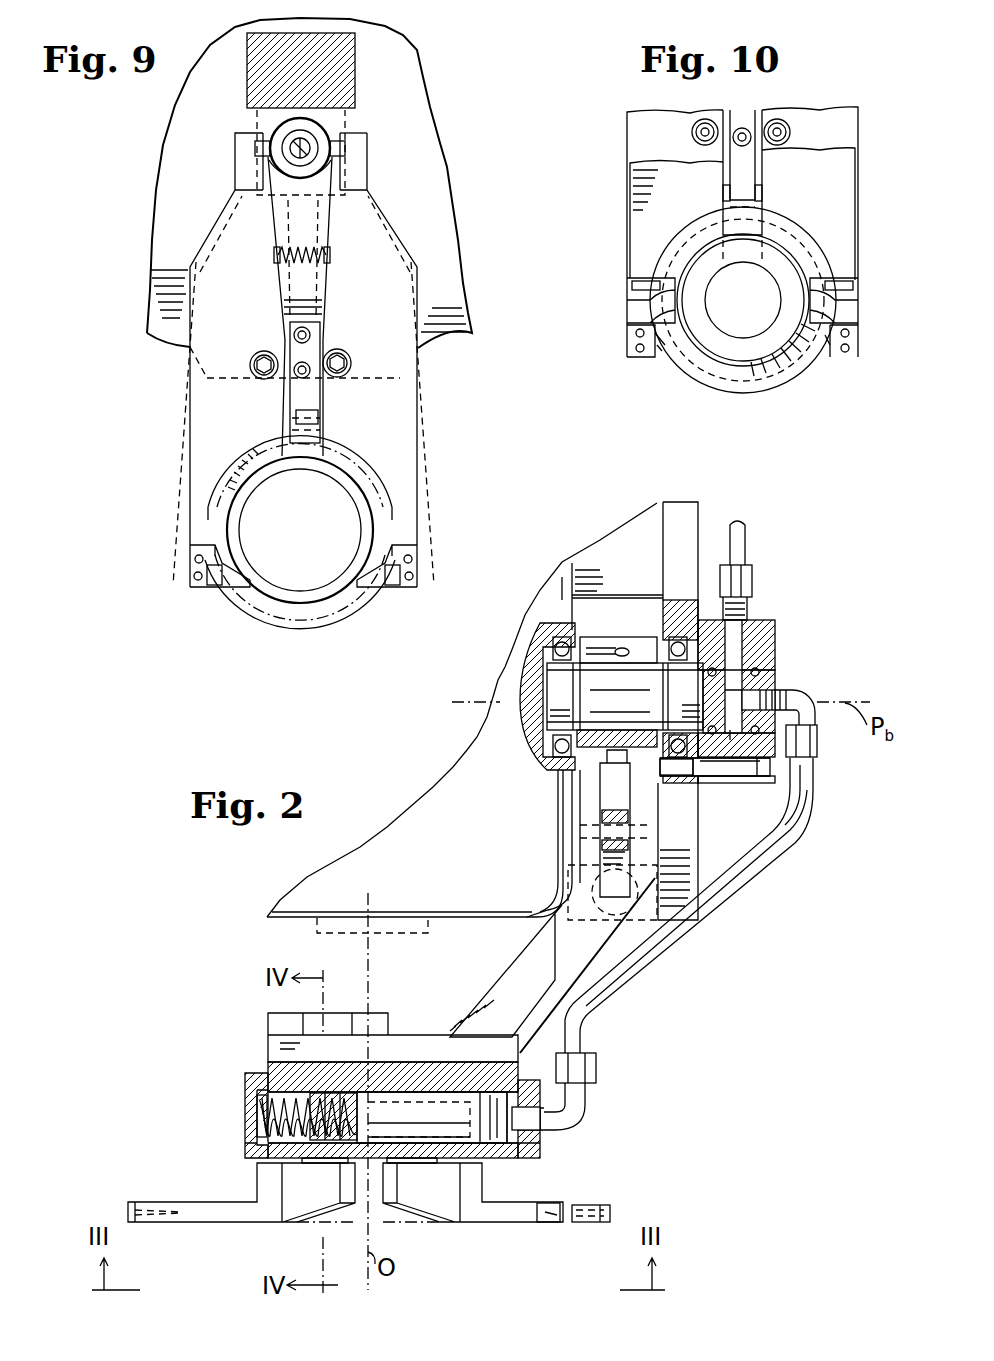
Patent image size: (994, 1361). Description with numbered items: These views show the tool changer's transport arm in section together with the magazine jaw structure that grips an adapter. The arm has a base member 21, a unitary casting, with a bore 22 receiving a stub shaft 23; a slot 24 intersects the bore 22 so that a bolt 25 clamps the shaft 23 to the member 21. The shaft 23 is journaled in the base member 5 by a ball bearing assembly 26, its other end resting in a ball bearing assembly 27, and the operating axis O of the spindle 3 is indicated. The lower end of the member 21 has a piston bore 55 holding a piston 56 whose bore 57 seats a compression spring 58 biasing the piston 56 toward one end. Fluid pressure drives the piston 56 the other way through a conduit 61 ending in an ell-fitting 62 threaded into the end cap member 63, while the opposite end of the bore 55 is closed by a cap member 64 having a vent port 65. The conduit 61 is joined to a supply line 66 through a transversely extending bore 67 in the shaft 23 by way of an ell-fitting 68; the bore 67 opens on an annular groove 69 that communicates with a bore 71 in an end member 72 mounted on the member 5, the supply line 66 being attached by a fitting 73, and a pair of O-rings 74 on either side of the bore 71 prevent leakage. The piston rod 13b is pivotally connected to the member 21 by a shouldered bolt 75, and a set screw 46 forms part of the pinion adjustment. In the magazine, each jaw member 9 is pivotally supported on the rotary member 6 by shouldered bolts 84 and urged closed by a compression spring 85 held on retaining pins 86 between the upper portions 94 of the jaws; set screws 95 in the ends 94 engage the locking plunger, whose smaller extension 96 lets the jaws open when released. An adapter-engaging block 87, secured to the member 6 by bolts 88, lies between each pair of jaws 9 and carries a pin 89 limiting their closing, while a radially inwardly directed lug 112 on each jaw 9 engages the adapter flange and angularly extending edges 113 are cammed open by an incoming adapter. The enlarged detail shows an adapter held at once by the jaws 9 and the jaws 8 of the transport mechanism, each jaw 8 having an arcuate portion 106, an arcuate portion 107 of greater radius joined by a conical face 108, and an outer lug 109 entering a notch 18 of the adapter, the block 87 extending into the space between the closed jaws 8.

In FIG. 2, the spindle 3 is at (410, 933).
In FIG. 2, the base member 5 is at (706, 516).
In FIG. 9, the rotary member 6 is at (456, 332).
In FIG. 10, the jaw 8 is at (640, 215).
In FIG. 2, the jaw 8 is at (218, 1222).
In FIG. 9, the jaw member 9 is at (196, 445).
In FIG. 10, the jaw member 9 is at (630, 137).
In FIG. 2, the piston rod 13b is at (608, 765).
In FIG. 10, the notch 18 is at (665, 310).
In FIG. 2, the base member 21 is at (577, 960).
In FIG. 2, the bore 22 is at (545, 732).
In FIG. 2, the stub shaft 23 is at (555, 675).
In FIG. 2, the slot 24 is at (640, 640).
In FIG. 2, the bolt 25 is at (621, 648).
In FIG. 2, the ball bearing assembly 26 is at (672, 672).
In FIG. 2, the ball bearing assembly 27 is at (555, 640).
In FIG. 2, the set screw 46 is at (527, 932).
In FIG. 2, the piston bore 55 is at (490, 1150).
In FIG. 2, the piston 56 is at (415, 1110).
In FIG. 2, the bore 57 is at (318, 1140).
In FIG. 2, the compression spring 58 is at (258, 1130).
In FIG. 2, the conduit 61 is at (740, 885).
In FIG. 2, the ell-fitting 62 is at (570, 1112).
In FIG. 2, the end cap member 63 is at (575, 1082).
In FIG. 2, the cap member 64 is at (247, 1080).
In FIG. 2, the vent port 65 is at (248, 1112).
In FIG. 2, the supply line 66 is at (742, 530).
In FIG. 2, the bore 67 is at (762, 697).
In FIG. 2, the ell-fitting 68 is at (803, 698).
In FIG. 2, the annular groove 69 is at (743, 680).
In FIG. 2, the bore 71 is at (735, 640).
In FIG. 2, the end member 72 is at (778, 790).
In FIG. 2, the fitting 73 is at (752, 580).
In FIG. 2, the O-rings 74 is at (735, 765).
In FIG. 2, the shouldered bolt 75 is at (620, 833).
In FIG. 9, the shouldered bolts 84 is at (258, 355).
In FIG. 9, the compression spring 85 is at (300, 250).
In FIG. 9, the retaining pins 86 is at (275, 252).
In FIG. 9, the adapter-engaging block 87 is at (305, 402).
In FIG. 9, the bolts 88 is at (310, 335).
In FIG. 9, the pin 89 is at (292, 420).
In FIG. 9, the upper portions 94 is at (237, 180).
In FIG. 9, the set screws 95 is at (262, 142).
In FIG. 9, the extension 96 is at (312, 140).
In FIG. 2, the arcuate shaped portion 106 is at (560, 1212).
In FIG. 2, the arcuate portion 107 is at (560, 1223).
In FIG. 2, the conical face 108 is at (570, 1214).
In FIG. 10, the lug 109 is at (630, 289).
In FIG. 9, the lug 112 is at (186, 590).
In FIG. 10, the lug 112 is at (628, 357).
In FIG. 9, the angularly extending edges 113 is at (250, 590).